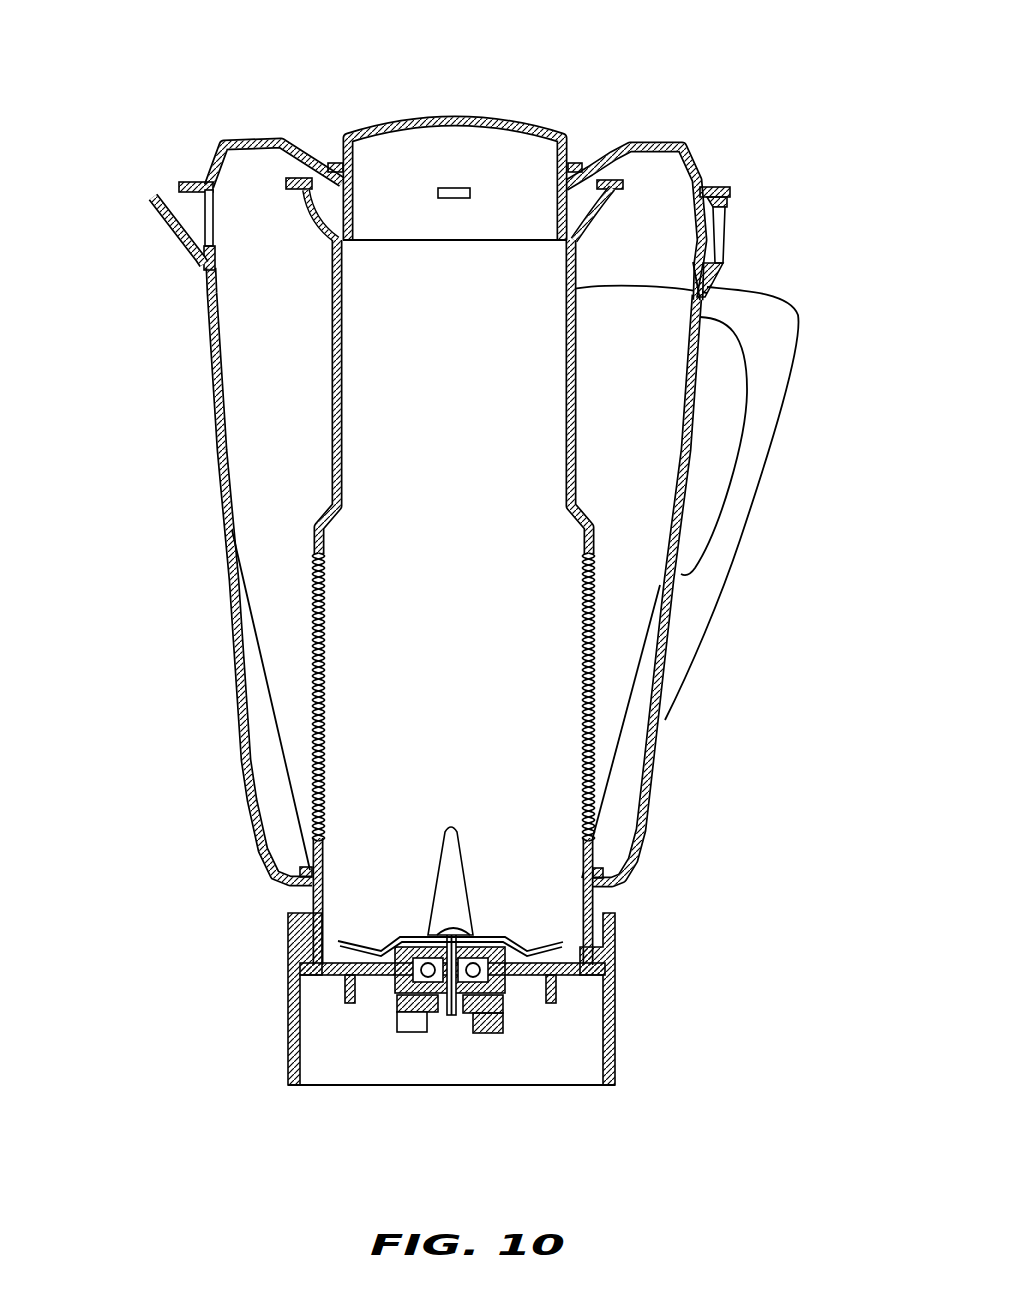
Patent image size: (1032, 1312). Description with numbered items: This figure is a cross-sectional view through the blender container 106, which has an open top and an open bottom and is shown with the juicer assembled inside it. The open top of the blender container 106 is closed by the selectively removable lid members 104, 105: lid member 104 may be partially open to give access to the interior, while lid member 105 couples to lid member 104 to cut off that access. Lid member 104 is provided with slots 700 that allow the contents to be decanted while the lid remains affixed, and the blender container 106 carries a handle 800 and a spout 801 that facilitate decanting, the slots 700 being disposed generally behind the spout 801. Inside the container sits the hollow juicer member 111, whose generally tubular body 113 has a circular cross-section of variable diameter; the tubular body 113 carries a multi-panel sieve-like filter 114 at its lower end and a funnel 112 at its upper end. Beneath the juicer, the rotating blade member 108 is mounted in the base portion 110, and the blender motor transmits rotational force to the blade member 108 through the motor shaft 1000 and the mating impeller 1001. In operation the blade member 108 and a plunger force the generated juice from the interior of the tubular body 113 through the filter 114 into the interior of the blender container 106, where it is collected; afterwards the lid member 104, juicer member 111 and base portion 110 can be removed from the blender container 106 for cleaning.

The lid member 104 is at (229, 135).
The lid member 105 is at (428, 117).
The blender container 106 is at (232, 605).
The blade member 108 is at (452, 882).
The base portion 110 is at (615, 1030).
The juicer member 111 is at (337, 347).
The funnel 112 is at (600, 215).
The tubular body 113 is at (703, 293).
The multi-panel sieve-like filter 114 is at (315, 775).
The slots 700 is at (210, 217).
The handle 800 is at (775, 350).
The spout 801 is at (160, 224).
The motor shaft 1000 is at (450, 1015).
The impeller 1001 is at (487, 1023).